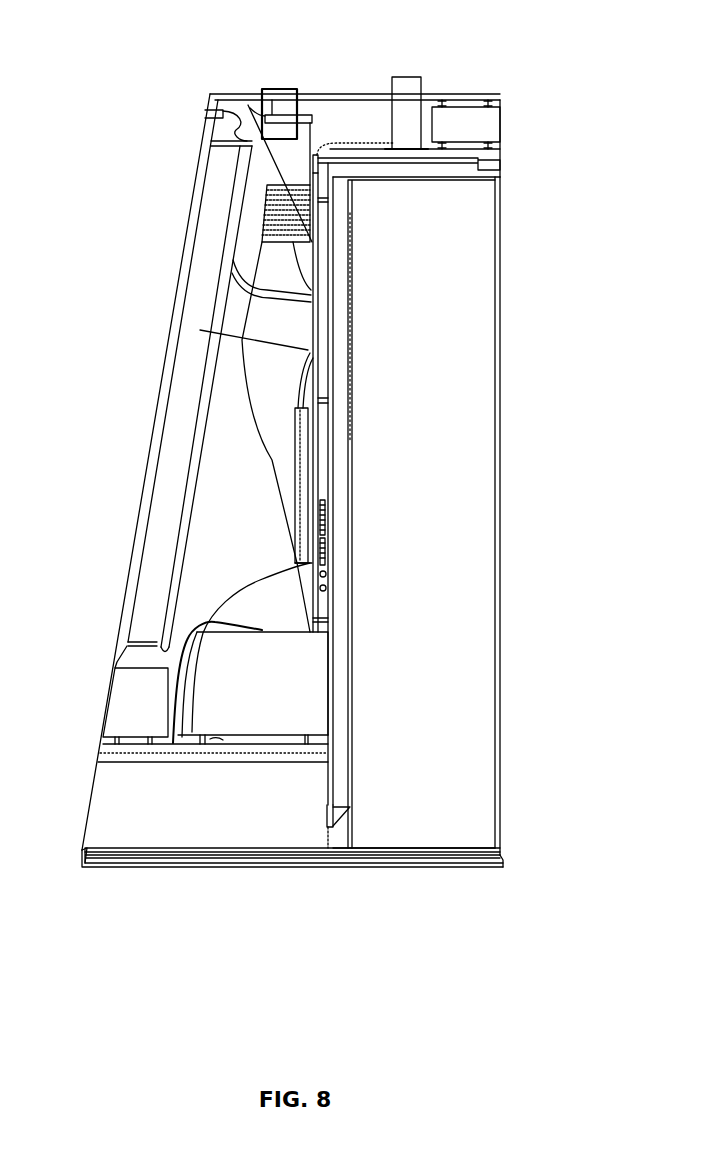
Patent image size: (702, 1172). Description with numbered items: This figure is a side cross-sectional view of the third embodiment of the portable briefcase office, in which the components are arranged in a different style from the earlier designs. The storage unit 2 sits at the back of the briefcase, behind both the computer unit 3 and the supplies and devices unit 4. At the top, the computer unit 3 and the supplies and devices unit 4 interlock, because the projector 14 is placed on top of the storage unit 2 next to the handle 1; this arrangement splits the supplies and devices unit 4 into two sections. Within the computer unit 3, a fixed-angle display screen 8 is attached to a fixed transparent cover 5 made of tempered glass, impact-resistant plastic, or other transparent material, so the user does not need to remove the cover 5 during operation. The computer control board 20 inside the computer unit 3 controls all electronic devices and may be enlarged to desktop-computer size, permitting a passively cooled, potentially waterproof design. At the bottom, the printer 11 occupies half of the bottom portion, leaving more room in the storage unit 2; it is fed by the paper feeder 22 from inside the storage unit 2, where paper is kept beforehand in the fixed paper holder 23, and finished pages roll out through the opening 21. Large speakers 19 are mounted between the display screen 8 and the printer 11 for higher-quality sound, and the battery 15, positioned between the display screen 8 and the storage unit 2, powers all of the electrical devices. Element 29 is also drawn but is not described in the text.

The handle 1 is at (406, 82).
The storage unit 2 is at (455, 280).
The computer unit 3 is at (240, 467).
The supplies and devices unit 4 is at (440, 108).
The transparent cover 5 is at (185, 236).
The display screen 8 is at (240, 178).
The printer 11 is at (225, 827).
The projector 14 is at (473, 125).
The battery 15 is at (222, 652).
The speakers 19 is at (140, 690).
The computer control board 20 is at (200, 330).
The opening 21 is at (87, 825).
The paper feeder 22 is at (353, 798).
The paper holder 23 is at (355, 490).
The connector box 29 is at (275, 95).